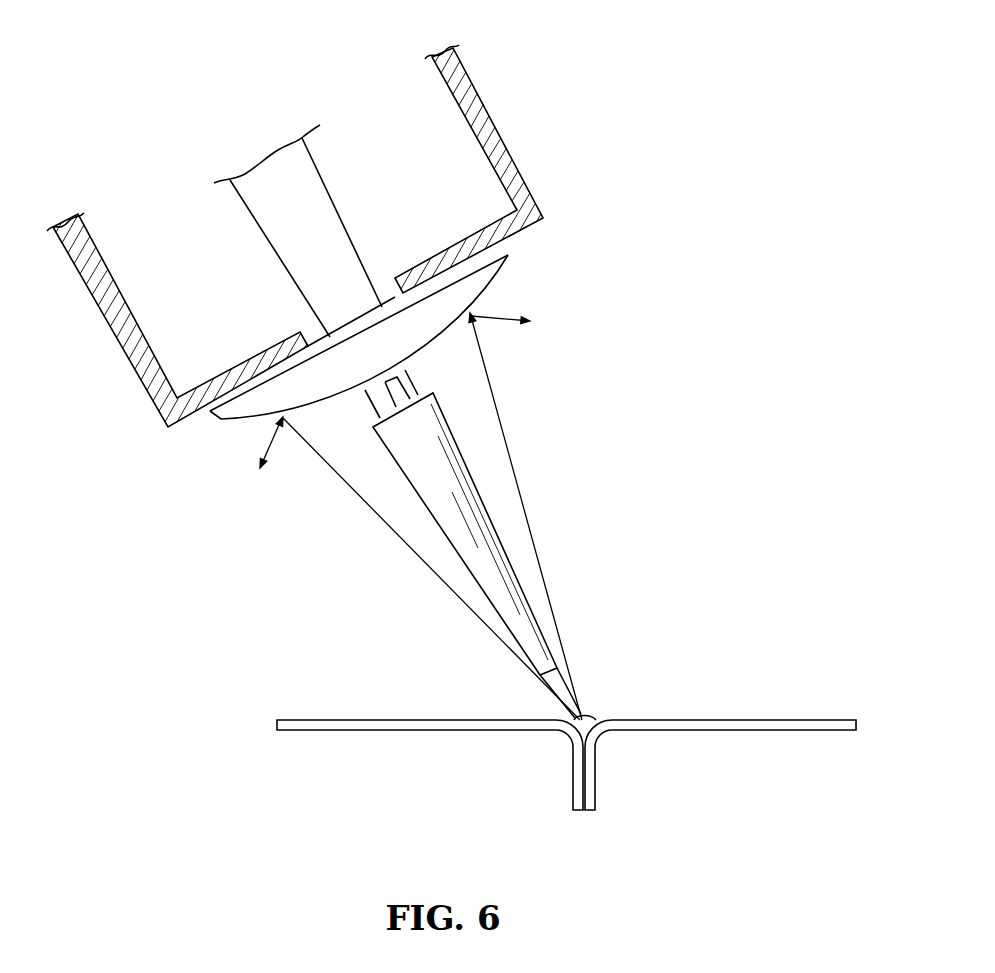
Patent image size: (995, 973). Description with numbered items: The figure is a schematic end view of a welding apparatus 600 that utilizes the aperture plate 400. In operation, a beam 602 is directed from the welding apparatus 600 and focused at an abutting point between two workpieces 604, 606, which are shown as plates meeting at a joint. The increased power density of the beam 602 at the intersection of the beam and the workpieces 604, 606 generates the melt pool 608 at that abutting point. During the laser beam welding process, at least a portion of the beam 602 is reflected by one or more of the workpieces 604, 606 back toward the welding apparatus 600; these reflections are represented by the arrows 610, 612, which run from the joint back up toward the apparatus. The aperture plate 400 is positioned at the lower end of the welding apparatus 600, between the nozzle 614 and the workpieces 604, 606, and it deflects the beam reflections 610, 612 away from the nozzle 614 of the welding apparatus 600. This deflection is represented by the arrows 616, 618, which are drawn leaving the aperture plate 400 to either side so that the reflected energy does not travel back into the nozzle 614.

The welding apparatus 600 is at (549, 54).
The beam 602 is at (330, 193).
The workpiece 604 is at (387, 732).
The workpiece 606 is at (775, 732).
The melt pool 608 is at (592, 718).
The beam reflection 610 is at (507, 445).
The beam reflection 612 is at (382, 520).
The nozzle 614 is at (490, 533).
The arrow 616 is at (500, 313).
The arrow 618 is at (269, 447).
The aperture plate 400 is at (217, 423).